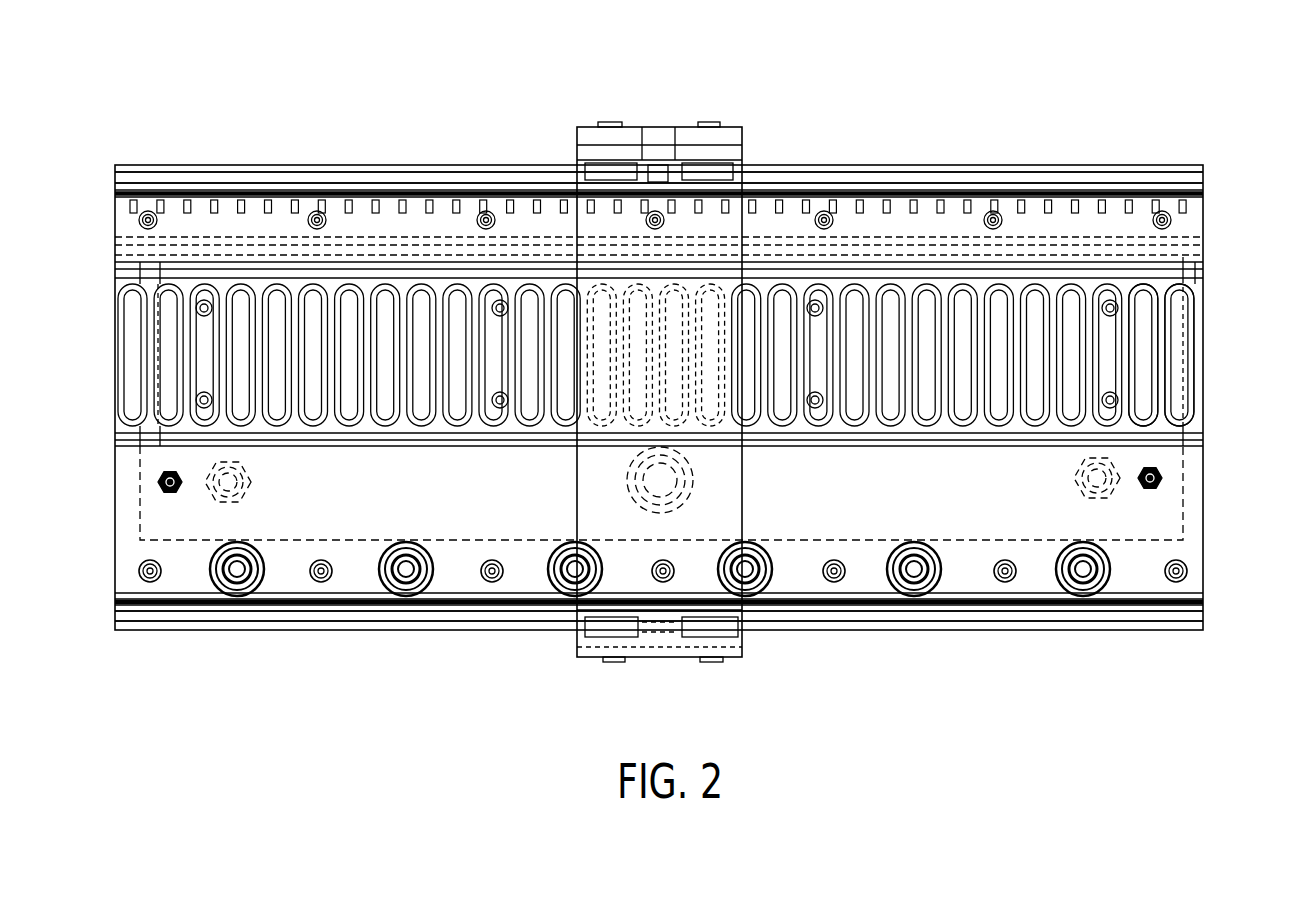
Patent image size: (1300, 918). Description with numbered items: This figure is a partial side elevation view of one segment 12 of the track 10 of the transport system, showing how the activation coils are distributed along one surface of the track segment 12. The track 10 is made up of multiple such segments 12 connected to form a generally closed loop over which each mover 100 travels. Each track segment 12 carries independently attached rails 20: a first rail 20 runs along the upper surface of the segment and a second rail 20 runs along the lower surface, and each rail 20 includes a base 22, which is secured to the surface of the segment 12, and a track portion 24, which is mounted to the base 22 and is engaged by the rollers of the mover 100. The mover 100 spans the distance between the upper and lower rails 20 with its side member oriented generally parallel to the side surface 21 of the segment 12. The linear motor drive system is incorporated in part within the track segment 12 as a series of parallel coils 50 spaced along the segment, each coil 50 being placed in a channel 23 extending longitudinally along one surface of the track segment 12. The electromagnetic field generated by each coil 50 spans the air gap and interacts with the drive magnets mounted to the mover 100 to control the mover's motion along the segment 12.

The track 10 is at (1123, 87).
The track segment 12 is at (1210, 228).
The rail 20 is at (960, 167).
The side surface 21 is at (1197, 485).
The base 22 is at (863, 185).
The channel 23 is at (1200, 290).
The track portion 24 is at (913, 173).
The coil 50 is at (1190, 408).
The mover 100 is at (732, 128).